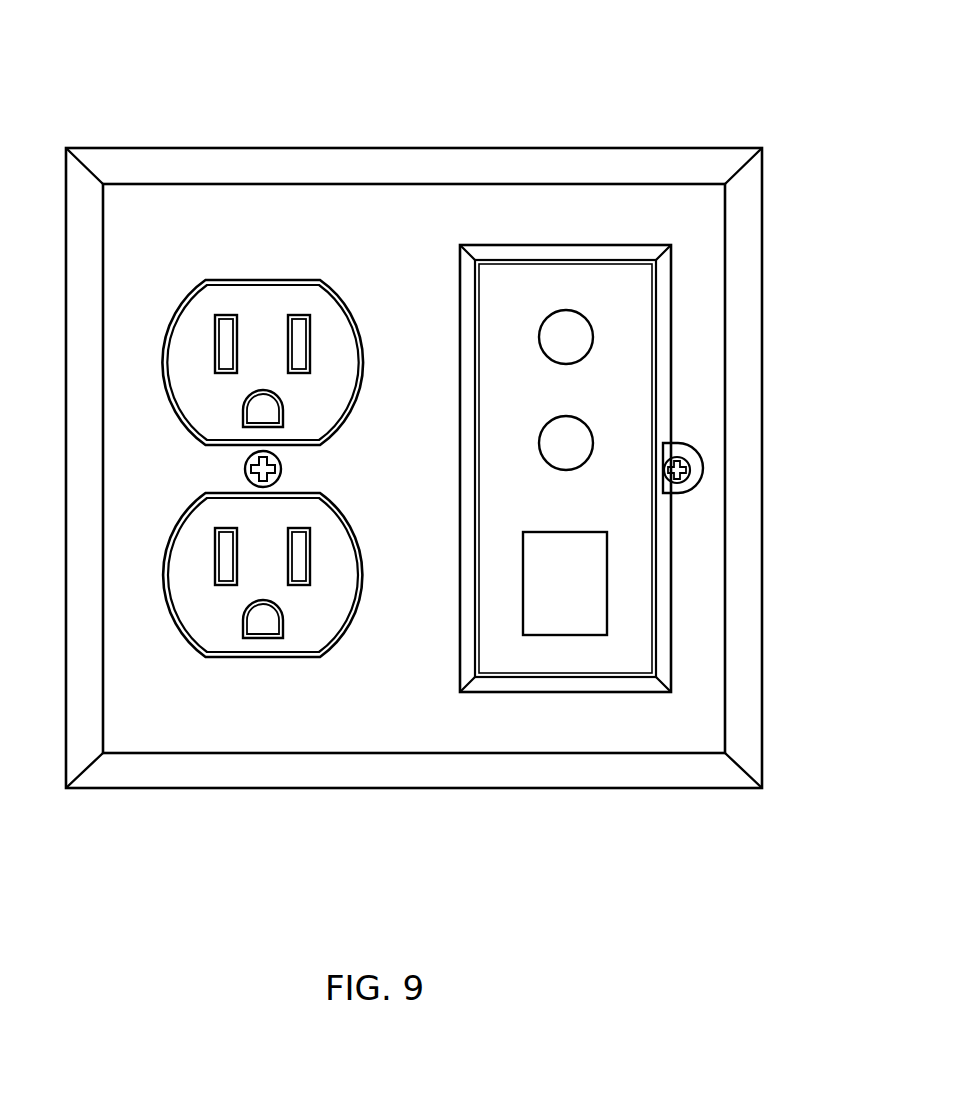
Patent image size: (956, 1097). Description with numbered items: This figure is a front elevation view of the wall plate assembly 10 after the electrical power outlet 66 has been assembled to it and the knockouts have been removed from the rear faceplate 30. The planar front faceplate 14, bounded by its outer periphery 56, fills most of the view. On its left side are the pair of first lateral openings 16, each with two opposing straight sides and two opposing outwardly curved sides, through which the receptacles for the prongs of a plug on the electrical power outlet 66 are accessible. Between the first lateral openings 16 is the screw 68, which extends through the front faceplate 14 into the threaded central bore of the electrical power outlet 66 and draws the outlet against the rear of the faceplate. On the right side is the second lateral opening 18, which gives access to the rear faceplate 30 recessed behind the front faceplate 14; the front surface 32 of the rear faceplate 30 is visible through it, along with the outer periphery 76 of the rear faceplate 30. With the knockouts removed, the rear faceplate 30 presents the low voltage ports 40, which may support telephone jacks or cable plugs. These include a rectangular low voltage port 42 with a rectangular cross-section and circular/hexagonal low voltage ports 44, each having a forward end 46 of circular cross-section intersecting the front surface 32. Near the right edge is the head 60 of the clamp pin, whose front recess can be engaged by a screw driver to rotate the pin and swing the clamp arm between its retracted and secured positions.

The wall plate assembly 10 is at (305, 112).
The front faceplate 14 is at (157, 232).
The first lateral openings 16 is at (227, 288).
The second lateral opening 18 is at (506, 675).
The rear faceplate 30 is at (492, 288).
The front surface 32 is at (503, 642).
The low voltage ports 40 is at (537, 497).
The rectangular low voltage port 42 is at (584, 591).
The circular/hexagonal low voltage ports 44 is at (573, 343).
The forward end 46 is at (555, 330).
The outer periphery 56 is at (530, 148).
The head 60 is at (692, 476).
The electrical power outlet 66 is at (208, 395).
The screw 68 is at (279, 464).
The outer periphery 76 is at (572, 693).